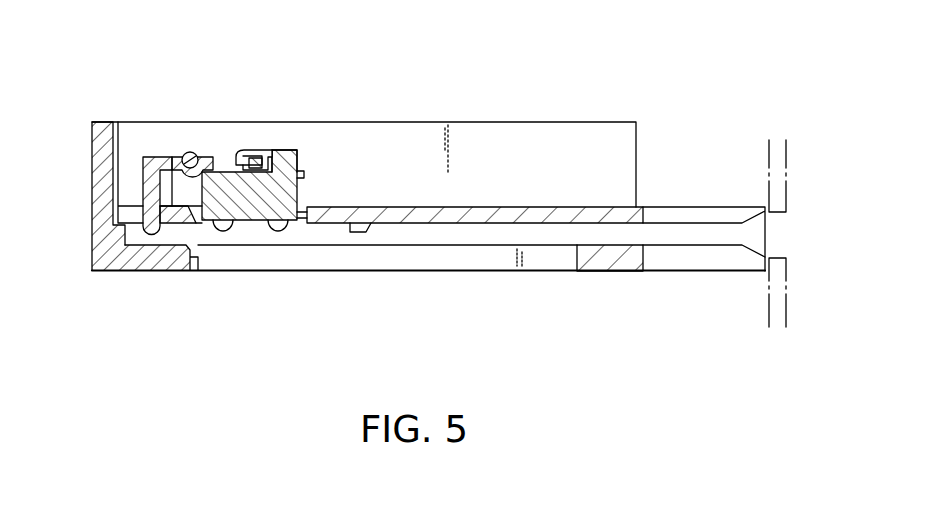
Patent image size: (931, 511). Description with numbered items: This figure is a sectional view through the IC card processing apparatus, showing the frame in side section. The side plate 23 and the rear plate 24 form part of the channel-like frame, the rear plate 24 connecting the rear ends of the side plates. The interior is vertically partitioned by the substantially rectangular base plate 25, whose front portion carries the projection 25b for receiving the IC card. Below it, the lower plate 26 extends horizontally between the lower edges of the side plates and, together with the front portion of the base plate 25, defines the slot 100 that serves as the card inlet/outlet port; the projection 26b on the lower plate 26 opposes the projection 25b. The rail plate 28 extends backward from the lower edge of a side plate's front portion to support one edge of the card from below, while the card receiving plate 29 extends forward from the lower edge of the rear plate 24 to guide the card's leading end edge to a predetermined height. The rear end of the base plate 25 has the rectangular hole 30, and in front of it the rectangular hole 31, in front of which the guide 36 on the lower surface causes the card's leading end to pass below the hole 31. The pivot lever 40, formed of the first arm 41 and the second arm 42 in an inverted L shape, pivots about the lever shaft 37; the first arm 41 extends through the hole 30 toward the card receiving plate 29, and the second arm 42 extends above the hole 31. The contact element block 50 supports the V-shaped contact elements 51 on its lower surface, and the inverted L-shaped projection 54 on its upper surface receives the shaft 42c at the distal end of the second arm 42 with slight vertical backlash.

The side plate 23 is at (577, 140).
The rear plate 24 is at (93, 190).
The base plate 25 is at (488, 207).
The projection 25b is at (698, 215).
The lower plate 26 is at (600, 265).
The projection 26b is at (707, 265).
The rail plate 28 is at (472, 266).
The card receiving plate 29 is at (173, 262).
The rectangular hole 30 is at (126, 248).
The rectangular hole 31 is at (302, 224).
The guide 36 is at (371, 233).
The lever shaft 37 is at (201, 152).
The pivot lever 40 is at (183, 148).
The first arm 41 is at (143, 180).
The second arm 42 is at (258, 147).
The shaft 42c is at (238, 147).
The contact element block 50 is at (303, 172).
The contact elements 51 is at (279, 233).
The inverted L-shaped projection 54 is at (278, 151).
The slot 100 is at (770, 238).